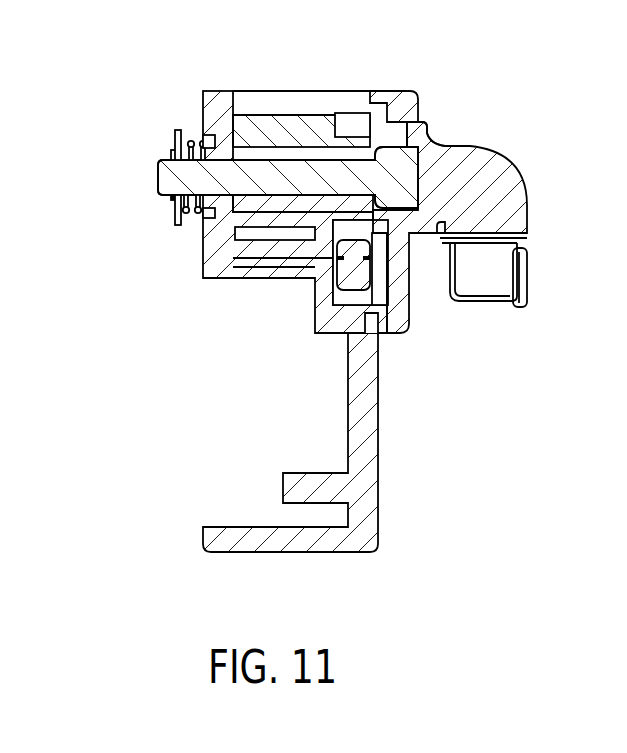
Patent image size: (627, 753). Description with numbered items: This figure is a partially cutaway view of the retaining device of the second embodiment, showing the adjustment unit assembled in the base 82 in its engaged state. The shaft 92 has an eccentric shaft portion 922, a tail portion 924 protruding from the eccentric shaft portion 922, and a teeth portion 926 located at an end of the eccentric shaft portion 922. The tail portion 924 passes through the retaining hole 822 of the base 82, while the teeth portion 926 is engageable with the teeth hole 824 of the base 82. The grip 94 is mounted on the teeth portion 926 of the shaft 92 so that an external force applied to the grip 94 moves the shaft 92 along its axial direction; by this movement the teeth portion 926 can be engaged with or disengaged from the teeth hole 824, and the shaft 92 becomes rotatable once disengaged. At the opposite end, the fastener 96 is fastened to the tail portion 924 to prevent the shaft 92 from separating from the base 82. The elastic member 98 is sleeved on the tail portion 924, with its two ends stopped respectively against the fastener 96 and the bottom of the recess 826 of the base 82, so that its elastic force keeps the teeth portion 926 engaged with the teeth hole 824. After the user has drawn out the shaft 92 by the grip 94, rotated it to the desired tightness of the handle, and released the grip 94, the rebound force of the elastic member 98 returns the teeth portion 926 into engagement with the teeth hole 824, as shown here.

The base 82 is at (392, 447).
The retaining hole 822 is at (235, 198).
The teeth hole 824 is at (404, 122).
The recess 826 is at (209, 135).
The shaft 92 is at (150, 172).
The eccentric shaft portion 922 is at (292, 152).
The tail portion 924 is at (173, 185).
The teeth portion 926 is at (423, 123).
The grip 94 is at (503, 180).
The fastener 96 is at (170, 158).
The elastic member 98 is at (193, 142).